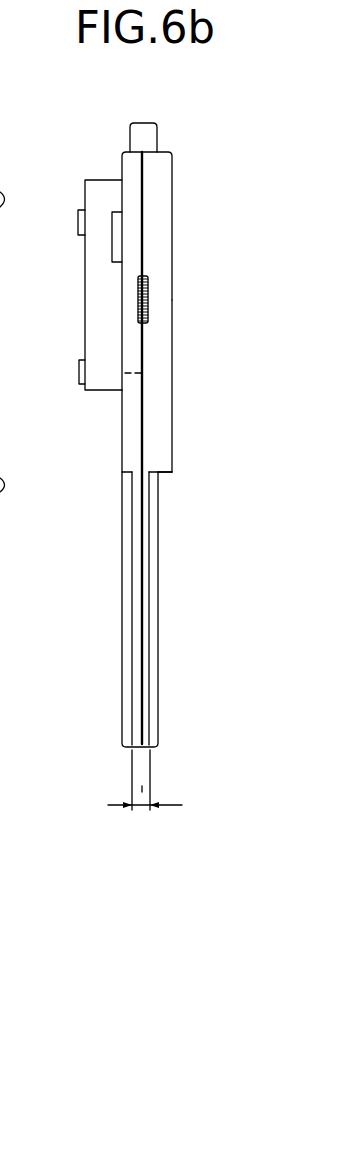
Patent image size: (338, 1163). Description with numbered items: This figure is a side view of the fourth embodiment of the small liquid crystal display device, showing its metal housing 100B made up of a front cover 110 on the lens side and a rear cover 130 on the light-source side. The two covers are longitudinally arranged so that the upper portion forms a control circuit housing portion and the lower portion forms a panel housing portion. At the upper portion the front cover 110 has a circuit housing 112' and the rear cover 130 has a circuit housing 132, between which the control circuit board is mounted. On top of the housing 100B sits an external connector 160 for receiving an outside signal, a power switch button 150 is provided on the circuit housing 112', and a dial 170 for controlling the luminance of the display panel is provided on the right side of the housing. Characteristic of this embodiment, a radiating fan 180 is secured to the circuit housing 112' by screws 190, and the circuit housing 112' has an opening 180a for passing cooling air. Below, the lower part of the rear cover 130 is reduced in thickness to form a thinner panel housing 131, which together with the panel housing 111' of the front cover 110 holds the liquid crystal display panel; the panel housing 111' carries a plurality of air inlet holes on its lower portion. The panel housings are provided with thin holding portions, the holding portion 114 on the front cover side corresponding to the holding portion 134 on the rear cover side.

The housing 100B is at (118, 148).
The front cover 110 is at (137, 392).
The circuit housing 112' is at (102, 431).
The rear cover 130 is at (162, 390).
The circuit housing 132 is at (173, 410).
The external connector 160 is at (148, 134).
The dial 170 is at (152, 282).
The radiating fan 180 is at (102, 290).
The opening 180a is at (125, 218).
The screws 190 is at (78, 225).
The power switch button 150 is at (112, 217).
The panel housing 111' is at (111, 609).
The holding portion 114 is at (130, 590).
The panel housing 131 is at (158, 552).
The holding portion 134 is at (152, 583).